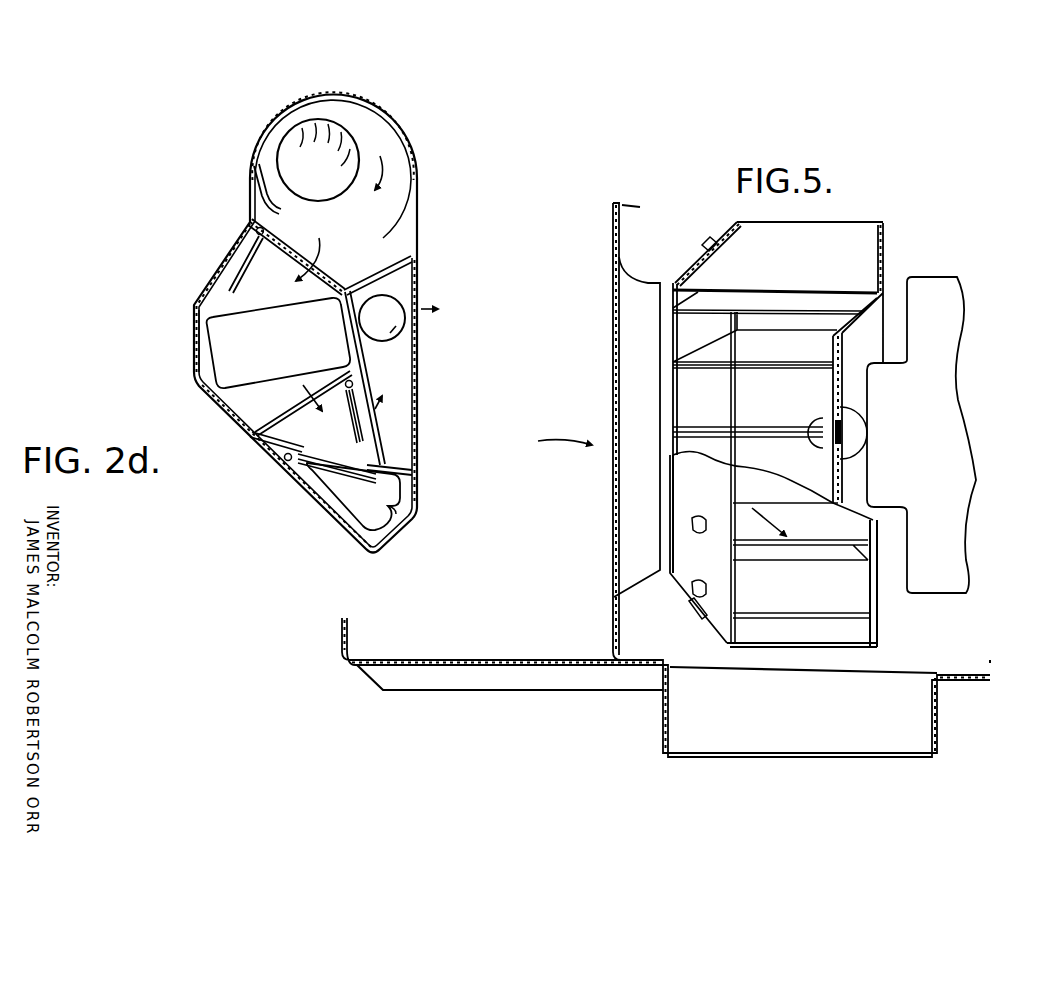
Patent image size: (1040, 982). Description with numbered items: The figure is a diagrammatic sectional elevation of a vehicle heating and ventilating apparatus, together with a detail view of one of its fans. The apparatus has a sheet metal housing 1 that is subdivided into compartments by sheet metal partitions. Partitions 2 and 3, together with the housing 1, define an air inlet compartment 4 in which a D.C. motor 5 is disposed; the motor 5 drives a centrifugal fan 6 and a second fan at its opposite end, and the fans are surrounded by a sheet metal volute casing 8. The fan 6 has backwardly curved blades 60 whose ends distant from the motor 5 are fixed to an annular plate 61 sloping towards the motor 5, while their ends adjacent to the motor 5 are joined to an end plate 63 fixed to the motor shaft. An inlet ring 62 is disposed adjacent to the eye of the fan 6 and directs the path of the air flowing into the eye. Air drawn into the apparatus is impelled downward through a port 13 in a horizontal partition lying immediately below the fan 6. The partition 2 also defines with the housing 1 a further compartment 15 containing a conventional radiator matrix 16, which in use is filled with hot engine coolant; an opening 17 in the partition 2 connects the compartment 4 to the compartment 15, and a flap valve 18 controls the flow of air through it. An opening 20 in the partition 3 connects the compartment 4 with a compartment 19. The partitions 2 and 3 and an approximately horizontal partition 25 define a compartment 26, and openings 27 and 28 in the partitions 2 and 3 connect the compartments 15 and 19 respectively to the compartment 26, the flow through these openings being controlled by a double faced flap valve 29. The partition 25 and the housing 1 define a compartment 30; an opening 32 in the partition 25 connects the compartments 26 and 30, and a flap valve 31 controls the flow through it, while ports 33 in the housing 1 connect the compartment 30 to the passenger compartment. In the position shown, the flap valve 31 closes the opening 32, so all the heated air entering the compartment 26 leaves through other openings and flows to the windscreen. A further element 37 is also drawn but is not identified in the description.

In FIG. 2D, the housing 1 is at (250, 225).
In FIG. 2D, the partition 2 is at (265, 424).
In FIG. 2D, the partition 3 is at (396, 268).
In FIG. 2D, the air inlet compartment 4 is at (296, 257).
In FIG. 5, the D.C. motor 5 is at (921, 435).
In FIG. 5, the centrifugal fan 6 is at (855, 214).
In FIG. 2D, the volute casing 8 is at (257, 172).
In FIG. 5, the port 13 is at (837, 722).
In FIG. 2D, the compartment 15 is at (267, 284).
In FIG. 2D, the radiator matrix 16 is at (215, 352).
In FIG. 2D, the opening 17 is at (309, 244).
In FIG. 2D, the flap valve 18 is at (242, 260).
In FIG. 2D, the compartment 19 is at (398, 362).
In FIG. 2D, the opening 20 is at (390, 277).
In FIG. 2D, the partition 25 is at (393, 468).
In FIG. 2D, the compartment 26 is at (320, 434).
In FIG. 2D, the opening 27 is at (300, 402).
In FIG. 2D, the opening 28 is at (360, 388).
In FIG. 2D, the double faced flap valve 29 is at (364, 427).
In FIG. 2D, the compartment 30 is at (353, 496).
In FIG. 2D, the flap valve 31 is at (318, 470).
In FIG. 2D, the opening 32 is at (302, 458).
In FIG. 2D, the ports 33 is at (395, 513).
In FIG. 2D, the roller 37 is at (398, 333).
In FIG. 2D, the blades 60 is at (345, 147).
In FIG. 5, the blades 60 is at (860, 263).
In FIG. 5, the annular plate 61 is at (690, 575).
In FIG. 5, the inlet ring 62 is at (640, 272).
In FIG. 5, the end plate 63 is at (880, 624).